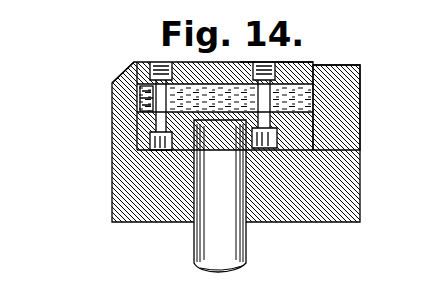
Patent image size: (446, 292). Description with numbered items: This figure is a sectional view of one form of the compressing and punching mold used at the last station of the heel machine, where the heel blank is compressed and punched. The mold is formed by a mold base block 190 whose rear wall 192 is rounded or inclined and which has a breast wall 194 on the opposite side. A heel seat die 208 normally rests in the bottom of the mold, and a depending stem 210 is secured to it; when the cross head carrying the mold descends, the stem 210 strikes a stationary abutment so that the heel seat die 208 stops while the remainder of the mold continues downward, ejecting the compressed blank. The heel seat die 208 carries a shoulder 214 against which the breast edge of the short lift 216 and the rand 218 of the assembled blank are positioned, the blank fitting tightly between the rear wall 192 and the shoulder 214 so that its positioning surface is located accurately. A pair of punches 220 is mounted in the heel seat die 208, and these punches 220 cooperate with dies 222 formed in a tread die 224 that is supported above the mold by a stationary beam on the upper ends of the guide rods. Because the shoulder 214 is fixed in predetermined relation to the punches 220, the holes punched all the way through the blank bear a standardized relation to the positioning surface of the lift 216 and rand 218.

The mold base block 190 is at (142, 180).
The rear wall 192 is at (325, 77).
The breast wall 194 is at (112, 83).
The heel seat die 208 is at (294, 142).
The depending stem 210 is at (238, 239).
The shoulder 214 is at (183, 62).
The short lift 216 is at (290, 117).
The rand 218 is at (294, 133).
The punches 220 is at (112, 131).
The dies 222 is at (157, 62).
The tread die 224 is at (302, 59).